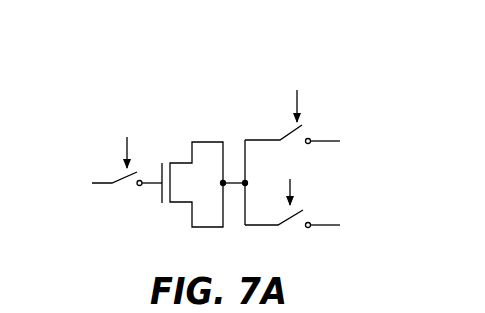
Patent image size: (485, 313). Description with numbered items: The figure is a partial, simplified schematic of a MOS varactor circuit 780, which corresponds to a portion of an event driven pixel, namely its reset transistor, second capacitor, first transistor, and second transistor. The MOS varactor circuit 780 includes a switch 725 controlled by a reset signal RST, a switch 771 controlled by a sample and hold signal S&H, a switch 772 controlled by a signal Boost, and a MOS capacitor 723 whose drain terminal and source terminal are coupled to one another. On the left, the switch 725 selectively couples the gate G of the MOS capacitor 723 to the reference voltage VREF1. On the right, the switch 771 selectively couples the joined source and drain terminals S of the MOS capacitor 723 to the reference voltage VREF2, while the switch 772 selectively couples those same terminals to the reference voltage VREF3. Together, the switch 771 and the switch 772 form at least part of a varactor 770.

The MOS varactor circuit 780 is at (115, 79).
The varactor 770 is at (357, 104).
The switch 771 is at (282, 120).
The switch 772 is at (299, 233).
The switch 725 is at (124, 193).
The MOS capacitor 723 is at (164, 216).